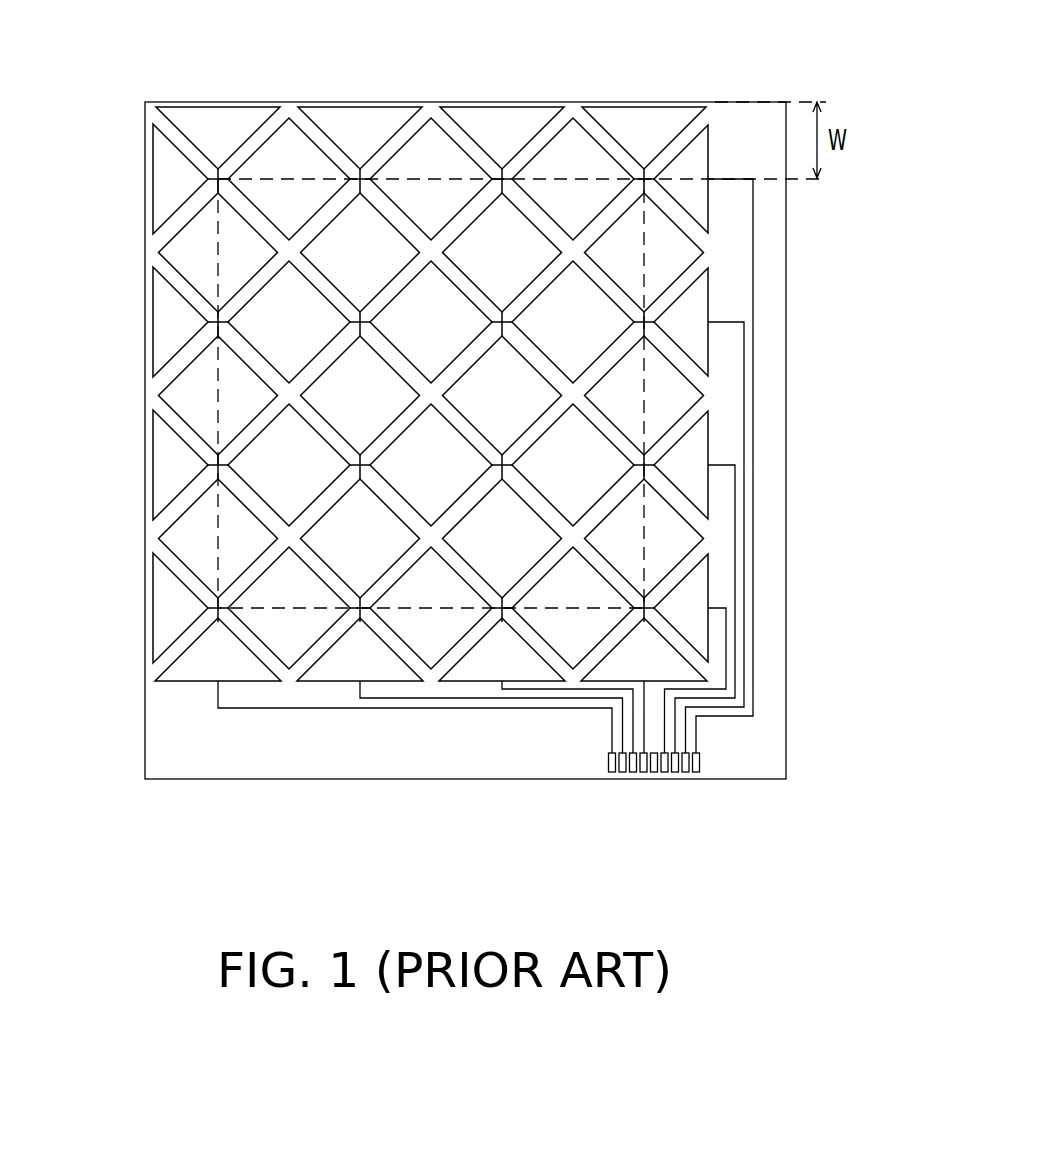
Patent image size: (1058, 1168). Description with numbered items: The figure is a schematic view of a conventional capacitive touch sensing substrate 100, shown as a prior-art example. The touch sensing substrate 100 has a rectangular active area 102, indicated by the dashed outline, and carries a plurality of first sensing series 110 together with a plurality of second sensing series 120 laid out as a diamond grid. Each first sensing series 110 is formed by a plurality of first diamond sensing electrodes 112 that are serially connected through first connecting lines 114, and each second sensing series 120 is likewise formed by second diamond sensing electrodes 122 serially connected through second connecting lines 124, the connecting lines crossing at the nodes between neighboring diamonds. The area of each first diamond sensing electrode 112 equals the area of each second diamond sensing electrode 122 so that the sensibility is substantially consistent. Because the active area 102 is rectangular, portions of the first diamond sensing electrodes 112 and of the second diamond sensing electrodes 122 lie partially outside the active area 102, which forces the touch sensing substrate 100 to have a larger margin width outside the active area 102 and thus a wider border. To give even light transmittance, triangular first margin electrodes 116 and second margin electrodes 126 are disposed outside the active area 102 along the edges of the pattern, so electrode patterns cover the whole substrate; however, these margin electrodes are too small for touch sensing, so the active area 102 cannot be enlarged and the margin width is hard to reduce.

The touch sensing substrate 100 is at (824, 851).
The active area 102 is at (218, 530).
The first sensing series 110 is at (431, 340).
The first diamond sensing electrode 112 is at (380, 232).
The first connecting line 114 is at (372, 183).
The first margin electrode 116 is at (358, 125).
The second sensing series 120 is at (380, 393).
The second diamond sensing electrode 122 is at (265, 338).
The second connecting line 124 is at (356, 323).
The second margin electrode 126 is at (163, 328).